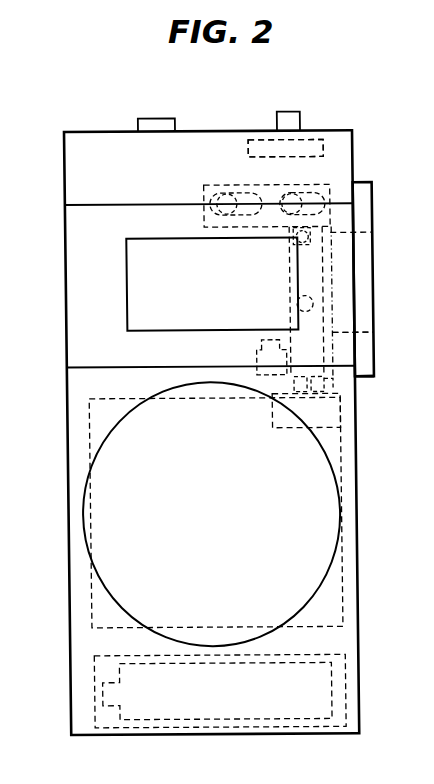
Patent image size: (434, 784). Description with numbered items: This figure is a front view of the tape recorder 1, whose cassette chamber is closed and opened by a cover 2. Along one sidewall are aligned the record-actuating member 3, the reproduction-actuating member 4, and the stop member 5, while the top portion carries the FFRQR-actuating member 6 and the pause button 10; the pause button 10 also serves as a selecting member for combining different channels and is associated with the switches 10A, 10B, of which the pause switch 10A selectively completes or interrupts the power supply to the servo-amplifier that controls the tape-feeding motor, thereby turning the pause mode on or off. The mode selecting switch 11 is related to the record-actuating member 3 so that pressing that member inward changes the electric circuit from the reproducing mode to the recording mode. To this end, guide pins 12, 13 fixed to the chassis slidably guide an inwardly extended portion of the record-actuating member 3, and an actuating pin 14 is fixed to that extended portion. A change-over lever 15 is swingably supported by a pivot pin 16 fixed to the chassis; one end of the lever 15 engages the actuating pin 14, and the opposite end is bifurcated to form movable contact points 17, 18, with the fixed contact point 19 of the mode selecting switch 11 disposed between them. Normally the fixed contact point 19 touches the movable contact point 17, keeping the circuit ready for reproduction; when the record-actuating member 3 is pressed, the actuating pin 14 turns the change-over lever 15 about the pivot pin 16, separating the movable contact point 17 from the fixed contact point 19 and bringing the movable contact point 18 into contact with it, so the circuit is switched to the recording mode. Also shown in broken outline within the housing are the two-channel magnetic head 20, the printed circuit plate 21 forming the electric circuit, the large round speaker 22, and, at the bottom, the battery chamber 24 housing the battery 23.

The tape recorder 1 is at (87, 132).
The cover 2 is at (98, 332).
The record-actuating member 3 is at (365, 212).
The reproduction-actuating member 4 is at (367, 253).
The stop member 5 is at (368, 352).
The FFRQR-actuating member 6 is at (175, 120).
The pause button 10 is at (283, 113).
The pause switch 10A is at (312, 132).
The switch 10B is at (285, 147).
The mode selecting switch 11 is at (305, 328).
The guide pin 12 is at (223, 197).
The guide pin 13 is at (300, 195).
The actuating pin 14 is at (295, 237).
The change-over lever 15 is at (305, 275).
The pivot pin 16 is at (305, 308).
The movable contact point 17 is at (326, 382).
The movable contact point 18 is at (292, 392).
The fixed contact point 19 is at (303, 393).
The two-channel magnetic head 20 is at (262, 355).
The printed circuit plate 21 is at (118, 397).
The speaker 22 is at (115, 428).
The battery 23 is at (240, 709).
The battery chamber 24 is at (98, 668).